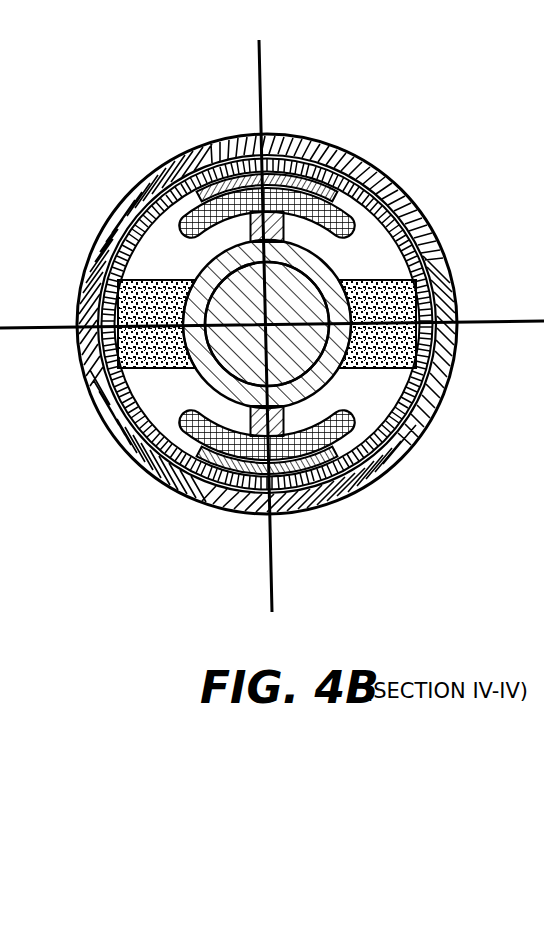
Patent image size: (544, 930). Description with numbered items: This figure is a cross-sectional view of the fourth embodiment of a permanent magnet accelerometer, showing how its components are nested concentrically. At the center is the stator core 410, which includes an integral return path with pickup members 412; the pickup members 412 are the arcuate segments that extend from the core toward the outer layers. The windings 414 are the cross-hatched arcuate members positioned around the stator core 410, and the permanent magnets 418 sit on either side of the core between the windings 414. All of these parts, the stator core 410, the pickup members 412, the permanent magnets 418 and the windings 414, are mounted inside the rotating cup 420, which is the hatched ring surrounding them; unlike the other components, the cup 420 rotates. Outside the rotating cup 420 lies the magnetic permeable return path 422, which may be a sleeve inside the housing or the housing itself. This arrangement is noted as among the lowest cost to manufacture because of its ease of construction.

The stator core 410 is at (200, 376).
The pickup members 412 is at (322, 492).
The windings 414 is at (300, 160).
The permanent magnets 418 is at (150, 283).
The cup 420 is at (407, 202).
The magnetic permeable return path 422 is at (388, 458).